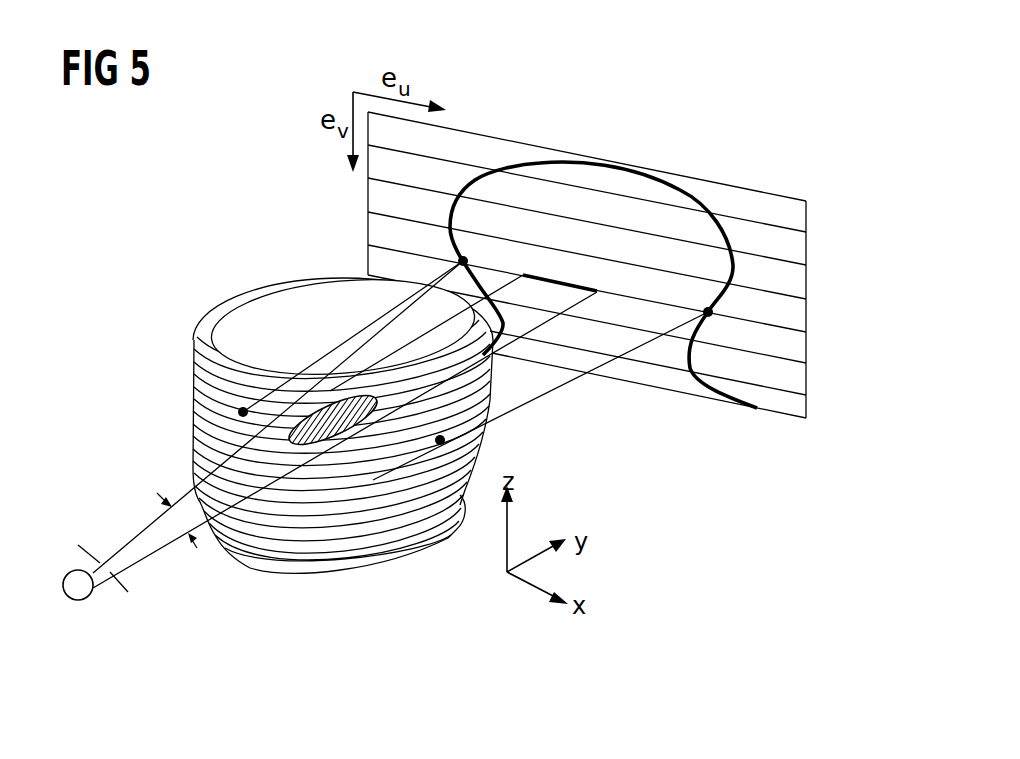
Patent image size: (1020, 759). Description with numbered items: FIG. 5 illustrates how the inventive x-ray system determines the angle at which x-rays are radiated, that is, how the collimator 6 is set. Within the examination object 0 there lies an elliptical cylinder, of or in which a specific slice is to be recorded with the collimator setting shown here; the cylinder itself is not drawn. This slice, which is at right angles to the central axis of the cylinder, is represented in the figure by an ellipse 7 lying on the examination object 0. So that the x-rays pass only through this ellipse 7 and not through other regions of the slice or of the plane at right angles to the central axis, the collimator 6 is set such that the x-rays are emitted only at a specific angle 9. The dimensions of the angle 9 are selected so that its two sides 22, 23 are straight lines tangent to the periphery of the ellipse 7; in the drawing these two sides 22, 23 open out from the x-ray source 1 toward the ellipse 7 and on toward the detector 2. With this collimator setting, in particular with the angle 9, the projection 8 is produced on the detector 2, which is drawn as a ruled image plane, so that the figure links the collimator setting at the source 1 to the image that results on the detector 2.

The examination object 0 is at (262, 310).
The light source 1 is at (82, 601).
The detector 2 is at (808, 246).
The collimator 6 is at (98, 538).
The ellipse 7 is at (318, 426).
The projection 8 is at (560, 280).
The angle 9 is at (172, 514).
The side of the angle 22 is at (138, 532).
The side of the angle 23 is at (168, 540).